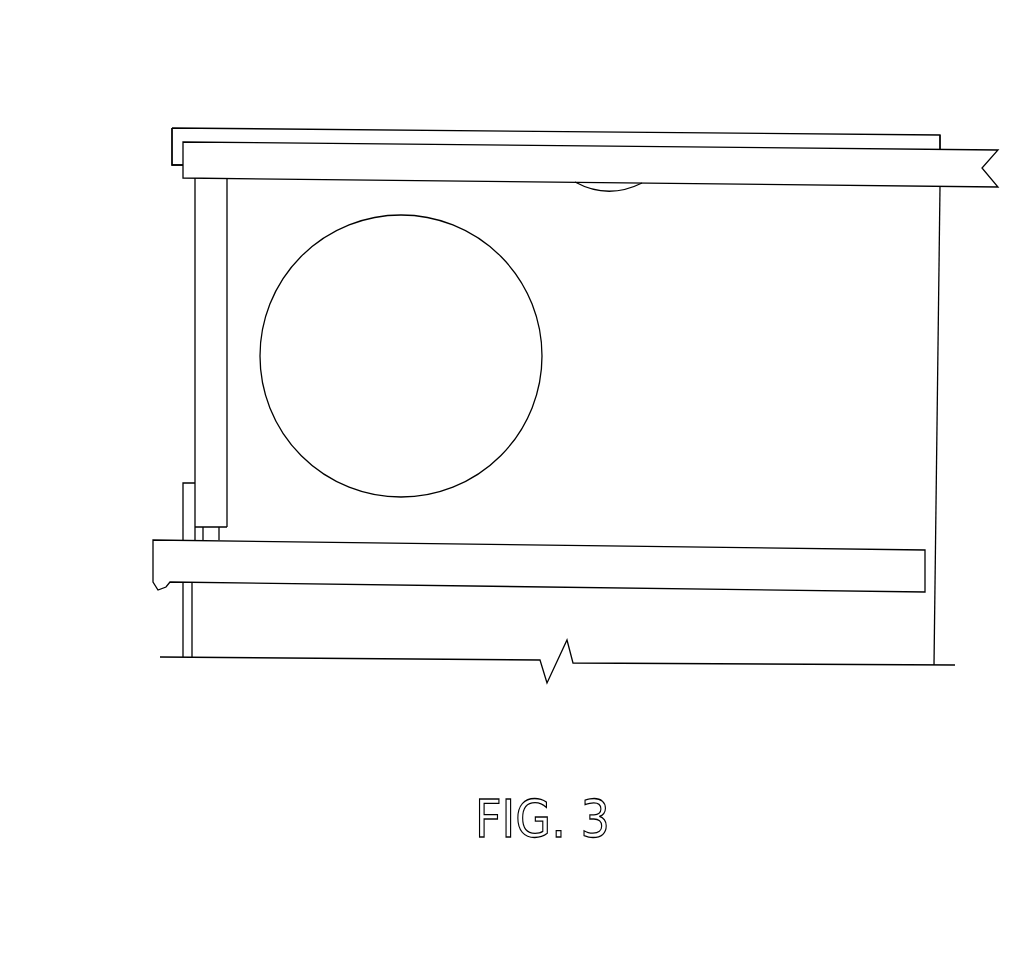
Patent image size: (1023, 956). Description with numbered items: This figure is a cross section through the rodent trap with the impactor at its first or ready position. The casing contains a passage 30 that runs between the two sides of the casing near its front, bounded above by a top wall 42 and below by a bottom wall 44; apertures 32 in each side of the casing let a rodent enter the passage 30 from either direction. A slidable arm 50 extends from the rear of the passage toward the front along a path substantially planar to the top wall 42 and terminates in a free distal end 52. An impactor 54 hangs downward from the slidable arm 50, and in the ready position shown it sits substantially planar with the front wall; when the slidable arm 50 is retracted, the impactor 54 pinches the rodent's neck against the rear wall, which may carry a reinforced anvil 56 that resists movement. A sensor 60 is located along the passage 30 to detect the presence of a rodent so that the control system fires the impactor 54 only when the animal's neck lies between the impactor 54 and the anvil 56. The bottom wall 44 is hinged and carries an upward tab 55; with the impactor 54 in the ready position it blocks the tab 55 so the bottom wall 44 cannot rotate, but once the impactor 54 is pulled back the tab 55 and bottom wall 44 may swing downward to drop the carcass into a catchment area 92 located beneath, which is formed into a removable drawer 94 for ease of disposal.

The passage 30 is at (865, 454).
The aperture 32 is at (516, 342).
The top wall 42 is at (370, 128).
The bottom wall 44 is at (800, 583).
The slidable arm 50 is at (873, 175).
The free distal end 52 is at (215, 158).
The impactor 54 is at (207, 318).
The tab 55 is at (180, 512).
The anvil 56 is at (935, 350).
The sensor 60 is at (609, 193).
The catchment area 92 is at (395, 640).
The drawer 94 is at (180, 620).